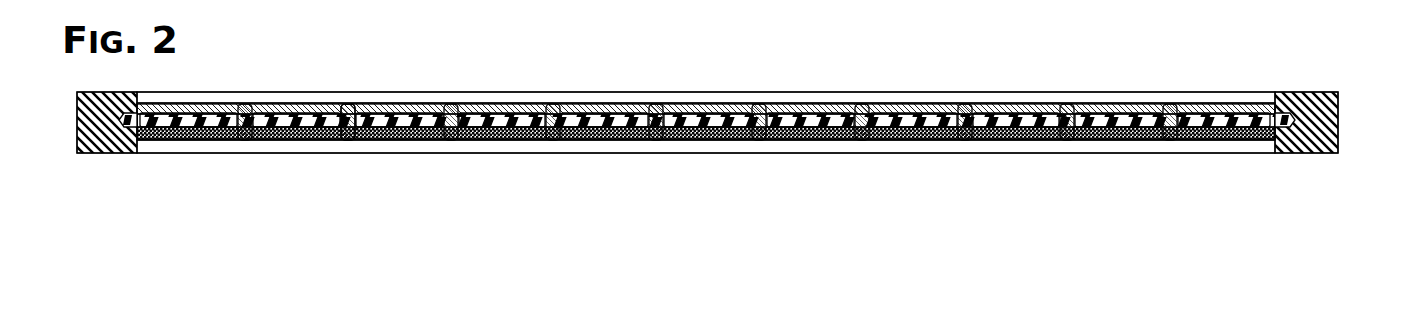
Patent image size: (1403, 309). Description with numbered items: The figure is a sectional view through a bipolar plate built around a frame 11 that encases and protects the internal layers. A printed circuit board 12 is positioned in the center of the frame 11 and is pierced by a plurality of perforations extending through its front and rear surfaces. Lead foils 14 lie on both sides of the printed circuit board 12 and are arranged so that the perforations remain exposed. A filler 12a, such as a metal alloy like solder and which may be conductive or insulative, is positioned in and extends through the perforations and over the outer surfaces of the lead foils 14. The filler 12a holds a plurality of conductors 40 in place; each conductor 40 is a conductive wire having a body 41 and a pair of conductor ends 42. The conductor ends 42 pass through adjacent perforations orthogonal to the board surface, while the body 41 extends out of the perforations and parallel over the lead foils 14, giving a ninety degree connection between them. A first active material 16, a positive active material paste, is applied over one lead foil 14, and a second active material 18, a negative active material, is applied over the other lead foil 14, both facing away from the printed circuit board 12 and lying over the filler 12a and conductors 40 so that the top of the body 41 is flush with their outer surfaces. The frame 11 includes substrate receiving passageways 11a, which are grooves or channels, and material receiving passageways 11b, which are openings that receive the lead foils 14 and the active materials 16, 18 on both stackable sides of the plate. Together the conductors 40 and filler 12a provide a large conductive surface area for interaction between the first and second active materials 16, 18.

The frame 11 is at (75, 155).
The substrate receiving passageways 11a is at (105, 100).
The material receiving passageways 11b is at (1263, 97).
The printed circuit board 12 is at (122, 150).
The filler 12a is at (963, 108).
The lead foils 14 is at (472, 141).
The first active material 16 is at (1122, 110).
The second active material 18 is at (1133, 143).
The conductors 40 is at (296, 110).
The body 41 is at (373, 142).
The conductor ends 42 is at (362, 112).